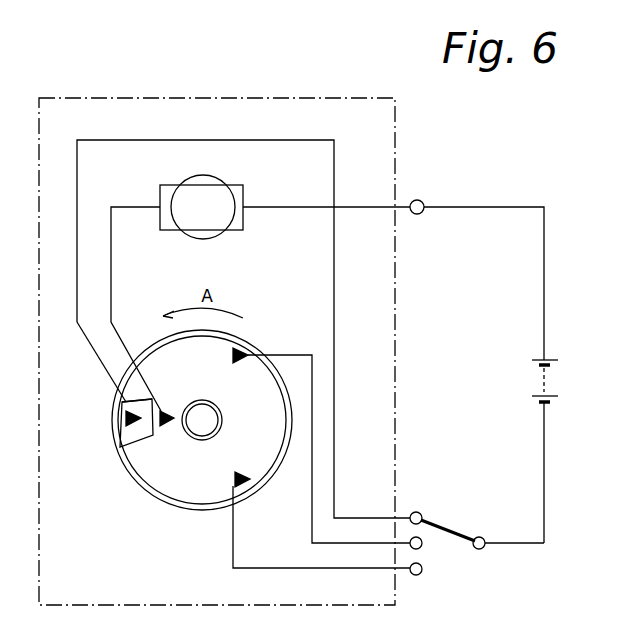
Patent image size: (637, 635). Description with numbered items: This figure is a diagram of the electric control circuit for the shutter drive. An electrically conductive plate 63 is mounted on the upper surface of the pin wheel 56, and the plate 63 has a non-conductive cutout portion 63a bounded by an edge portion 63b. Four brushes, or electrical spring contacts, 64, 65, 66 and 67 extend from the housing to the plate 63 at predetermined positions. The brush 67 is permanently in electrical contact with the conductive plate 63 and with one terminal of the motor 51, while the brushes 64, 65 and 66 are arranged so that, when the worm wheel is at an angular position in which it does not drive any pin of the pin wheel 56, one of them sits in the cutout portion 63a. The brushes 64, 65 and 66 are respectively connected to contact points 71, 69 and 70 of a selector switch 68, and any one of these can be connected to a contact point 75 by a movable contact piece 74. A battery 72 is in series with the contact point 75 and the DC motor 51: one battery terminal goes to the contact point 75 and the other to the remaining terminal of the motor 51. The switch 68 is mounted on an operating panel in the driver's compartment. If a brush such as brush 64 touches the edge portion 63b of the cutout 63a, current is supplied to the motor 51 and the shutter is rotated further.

The motor 51 is at (215, 188).
The pin wheel 56 is at (130, 478).
The plate 63 is at (172, 482).
The cutout portion 63a is at (127, 433).
The edge portion 63b is at (124, 402).
The brush 64 is at (103, 367).
The brush 65 is at (233, 537).
The brush 66 is at (295, 354).
The brush 67 is at (118, 335).
The selector switch 68 is at (475, 544).
The contact point 69 is at (418, 575).
The contact point 70 is at (422, 548).
The contact point 71 is at (416, 511).
The battery 72 is at (535, 381).
The movable contact piece 74 is at (450, 527).
The contact point 75 is at (484, 540).